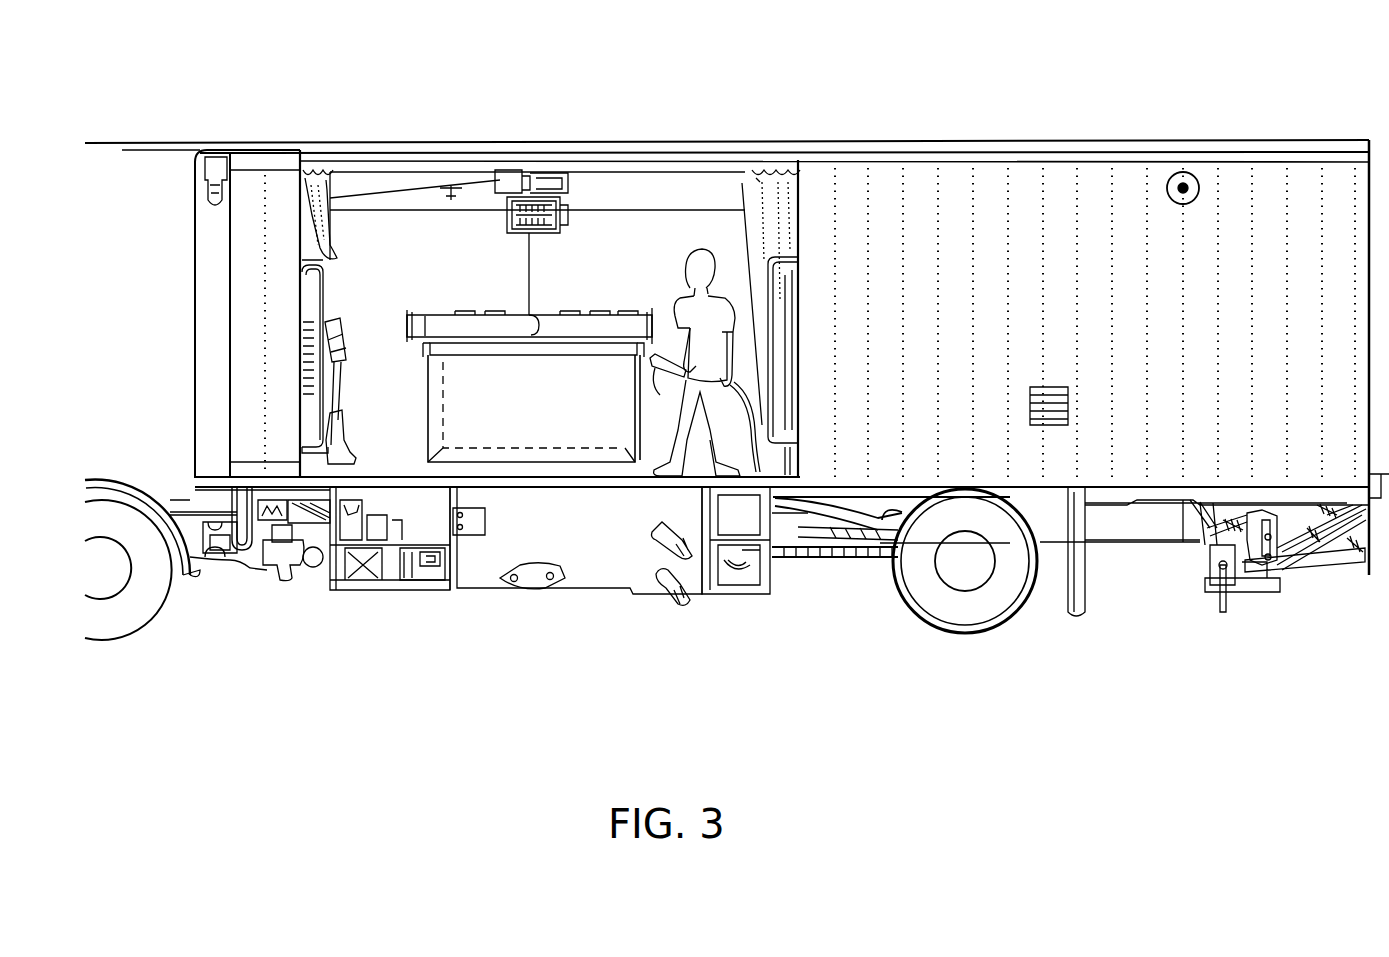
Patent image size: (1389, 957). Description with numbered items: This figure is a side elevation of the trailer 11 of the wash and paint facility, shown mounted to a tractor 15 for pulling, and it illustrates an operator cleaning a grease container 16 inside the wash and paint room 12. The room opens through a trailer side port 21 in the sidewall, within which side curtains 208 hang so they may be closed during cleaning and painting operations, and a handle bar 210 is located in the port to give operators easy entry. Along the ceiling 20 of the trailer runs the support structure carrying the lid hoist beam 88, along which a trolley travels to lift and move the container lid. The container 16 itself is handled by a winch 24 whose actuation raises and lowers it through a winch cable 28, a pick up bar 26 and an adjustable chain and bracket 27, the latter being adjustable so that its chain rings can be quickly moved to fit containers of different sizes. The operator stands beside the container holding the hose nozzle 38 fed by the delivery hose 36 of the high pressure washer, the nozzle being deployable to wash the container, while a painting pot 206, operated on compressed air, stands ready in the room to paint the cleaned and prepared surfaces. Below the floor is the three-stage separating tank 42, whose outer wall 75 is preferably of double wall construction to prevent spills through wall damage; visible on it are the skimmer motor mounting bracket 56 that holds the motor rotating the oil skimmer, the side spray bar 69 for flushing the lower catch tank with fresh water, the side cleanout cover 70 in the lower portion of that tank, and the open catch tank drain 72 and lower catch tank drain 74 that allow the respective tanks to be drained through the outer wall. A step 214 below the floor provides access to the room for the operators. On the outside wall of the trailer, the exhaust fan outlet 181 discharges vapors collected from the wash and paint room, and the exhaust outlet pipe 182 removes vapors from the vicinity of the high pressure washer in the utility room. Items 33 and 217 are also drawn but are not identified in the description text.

The trailer 11 is at (975, 142).
The wash and paint room 12 is at (434, 286).
The tractor 15 is at (154, 286).
The grease container 16 is at (430, 396).
The ceiling 20 is at (648, 150).
The trailer side port 21 is at (812, 280).
The winch 24 is at (568, 222).
The pick up bar 26 is at (518, 326).
The adjustable chain and bracket 27 is at (470, 313).
The winch cable 28 is at (530, 258).
The bracket 33 is at (218, 160).
The delivery hose 36 is at (738, 400).
The hose nozzle 38 is at (650, 370).
The separating tank 42 is at (478, 590).
The skimmer motor mounting bracket 56 is at (488, 520).
The side spray bar 69 is at (416, 592).
The side cleanout cover 70 is at (535, 565).
The open catch tank drain 72 is at (658, 538).
The lower catch tank drain 74 is at (666, 594).
The outer wall 75 is at (588, 590).
The lid hoist beam 88 is at (351, 350).
The exhaust fan outlet 181 is at (1030, 400).
The exhaust outlet pipe 182 is at (1198, 176).
The painting pot 206 is at (352, 455).
The side curtains 208 is at (320, 172).
The handle bar 210 is at (308, 290).
The step 214 is at (375, 592).
The storage box 217 is at (772, 580).